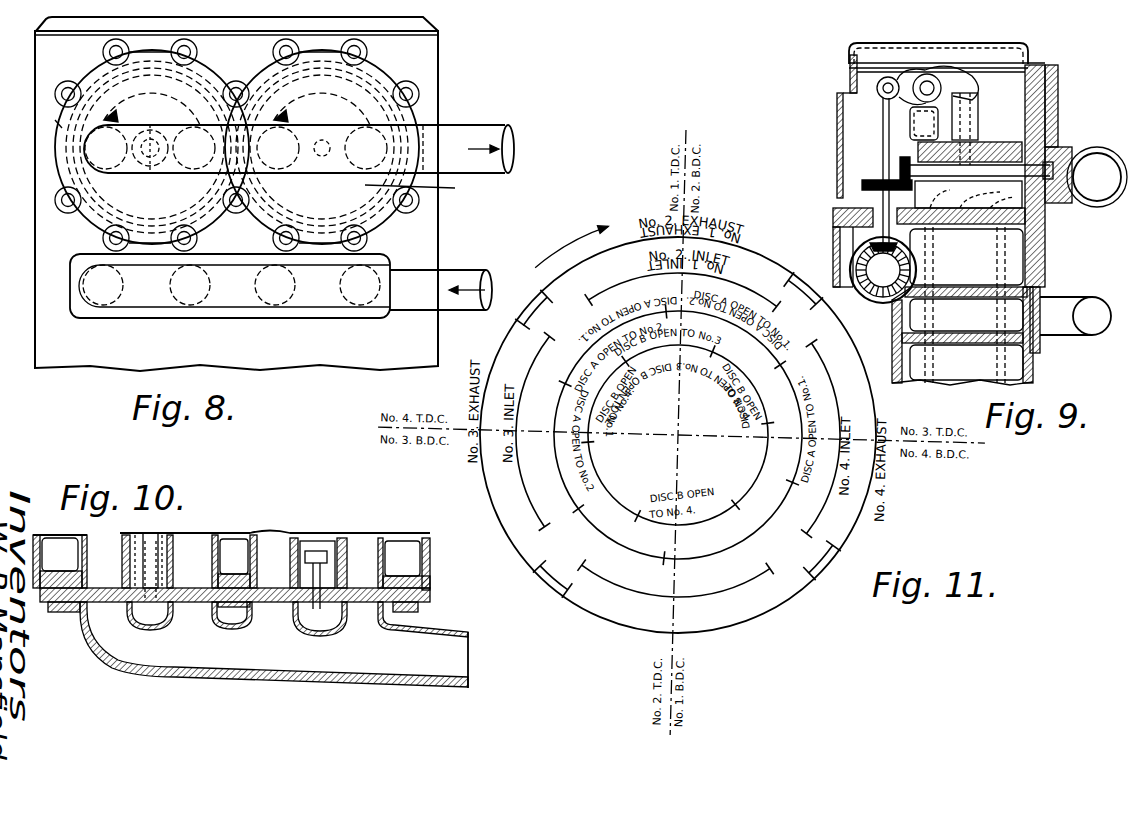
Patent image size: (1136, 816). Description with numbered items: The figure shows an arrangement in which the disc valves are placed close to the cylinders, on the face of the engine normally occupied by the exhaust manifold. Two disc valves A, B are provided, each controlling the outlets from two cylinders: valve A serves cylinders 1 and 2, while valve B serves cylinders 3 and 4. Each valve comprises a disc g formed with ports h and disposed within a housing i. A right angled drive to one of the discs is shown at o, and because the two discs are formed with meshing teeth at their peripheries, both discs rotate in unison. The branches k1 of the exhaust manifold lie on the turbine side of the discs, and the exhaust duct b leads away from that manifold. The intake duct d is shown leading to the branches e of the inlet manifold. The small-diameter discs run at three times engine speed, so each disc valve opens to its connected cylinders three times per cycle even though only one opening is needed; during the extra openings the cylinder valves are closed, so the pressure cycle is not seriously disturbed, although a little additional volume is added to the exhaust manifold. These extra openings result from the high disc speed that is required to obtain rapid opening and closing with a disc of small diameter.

In FIG. 8, the disc valve A is at (90, 210).
In FIG. 8, the disc valve B is at (419, 193).
In FIG. 9, the valve a is at (902, 170).
In FIG. 8, the exhaust duct b is at (473, 138).
In FIG. 10, the exhaust duct b is at (446, 640).
In FIG. 9, the exhaust duct b is at (1092, 196).
In FIG. 8, the intake duct d is at (448, 278).
In FIG. 9, the intake duct d is at (1060, 330).
In FIG. 8, the branches of the inlet manifold e is at (355, 306).
In FIG. 8, the disc g is at (238, 84).
In FIG. 10, the disc g is at (183, 604).
In FIG. 9, the disc g is at (1052, 102).
In FIG. 8, the ports h is at (125, 92).
In FIG. 8, the housing i is at (56, 122).
In FIG. 9, the housing i is at (1042, 258).
In FIG. 8, the branches of the exhaust manifold k1 is at (263, 138).
In FIG. 10, the branches of the exhaust manifold k1 is at (275, 610).
In FIG. 9, the branches of the exhaust manifold k1 is at (1062, 160).
In FIG. 8, the right angled drive o is at (150, 160).
In FIG. 8, the cylinder number 1 is at (106, 148).
In FIG. 8, the cylinder number 2 is at (194, 148).
In FIG. 8, the cylinder number 3 is at (278, 148).
In FIG. 8, the cylinder number 4 is at (366, 148).